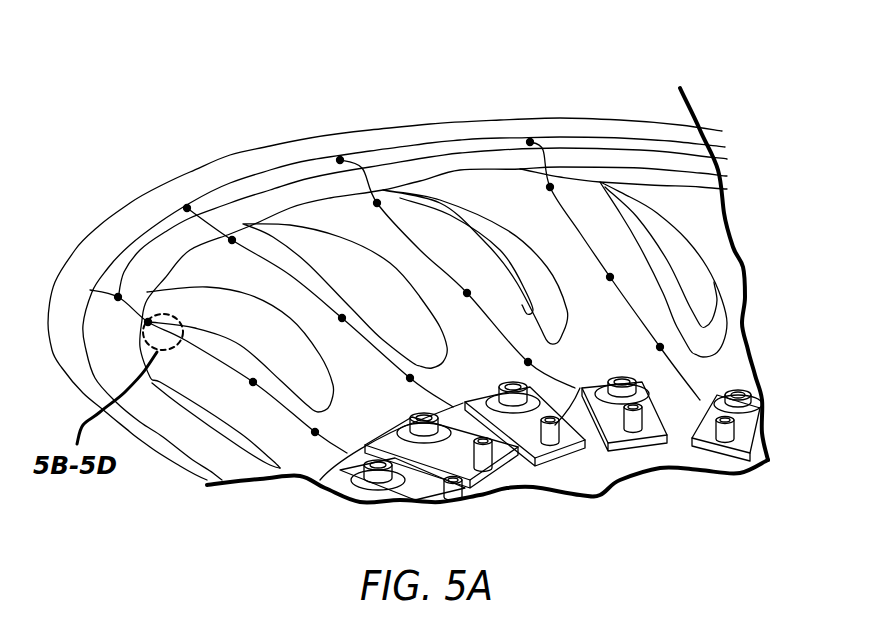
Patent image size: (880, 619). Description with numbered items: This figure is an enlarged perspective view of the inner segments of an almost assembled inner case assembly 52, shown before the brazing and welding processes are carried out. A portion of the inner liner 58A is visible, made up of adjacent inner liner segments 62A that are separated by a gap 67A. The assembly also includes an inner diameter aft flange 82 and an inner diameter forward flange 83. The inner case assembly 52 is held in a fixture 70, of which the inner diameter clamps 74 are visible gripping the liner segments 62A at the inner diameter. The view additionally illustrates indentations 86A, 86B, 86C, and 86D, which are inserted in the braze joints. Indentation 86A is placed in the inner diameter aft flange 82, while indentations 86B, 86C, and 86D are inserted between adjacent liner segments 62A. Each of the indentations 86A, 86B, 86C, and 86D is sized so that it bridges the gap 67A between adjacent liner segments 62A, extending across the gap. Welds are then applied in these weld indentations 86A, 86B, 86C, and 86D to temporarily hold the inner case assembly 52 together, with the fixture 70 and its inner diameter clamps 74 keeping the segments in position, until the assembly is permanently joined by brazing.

The fixture 70 is at (143, 76).
The inner case assembly 52 is at (276, 126).
The inner diameter aft flange 82 is at (147, 242).
The indentation 86A is at (118, 297).
The indentation 86B is at (552, 185).
The indentation 86C is at (613, 274).
The indentation 86D is at (660, 346).
The gap 67A is at (579, 237).
The inner liner 58A is at (675, 190).
The inner liner segments 62A is at (324, 465).
The inner diameter clamps 74 is at (540, 445).
The inner diameter forward flange 83 is at (597, 425).